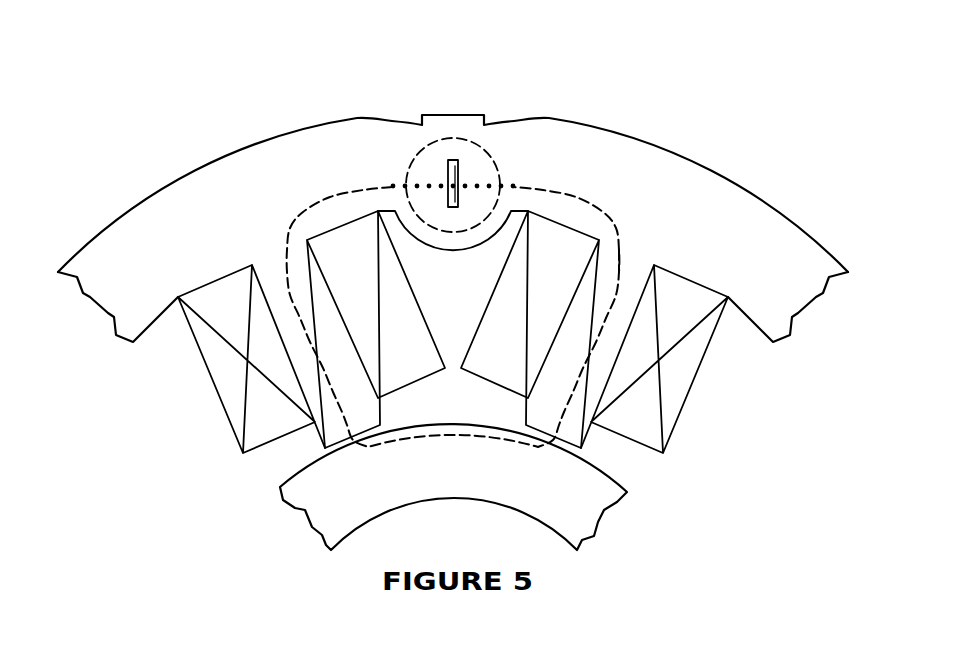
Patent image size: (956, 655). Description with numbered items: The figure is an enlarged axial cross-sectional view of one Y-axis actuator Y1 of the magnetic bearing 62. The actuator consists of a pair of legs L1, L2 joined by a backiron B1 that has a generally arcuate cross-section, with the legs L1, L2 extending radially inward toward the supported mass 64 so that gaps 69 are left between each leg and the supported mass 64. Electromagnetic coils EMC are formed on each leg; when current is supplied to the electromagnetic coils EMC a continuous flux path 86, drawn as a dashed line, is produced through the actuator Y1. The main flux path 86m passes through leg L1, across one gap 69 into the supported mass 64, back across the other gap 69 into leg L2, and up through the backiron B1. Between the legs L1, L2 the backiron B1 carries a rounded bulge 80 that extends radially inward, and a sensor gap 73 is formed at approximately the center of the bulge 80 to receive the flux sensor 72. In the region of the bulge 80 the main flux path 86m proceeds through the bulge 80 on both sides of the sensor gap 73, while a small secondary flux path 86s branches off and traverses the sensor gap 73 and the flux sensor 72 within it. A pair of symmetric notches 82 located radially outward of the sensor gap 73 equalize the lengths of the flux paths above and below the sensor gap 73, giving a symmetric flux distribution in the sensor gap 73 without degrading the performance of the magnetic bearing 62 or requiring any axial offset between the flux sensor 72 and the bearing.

The magnetic bearing 62 is at (183, 165).
The supported mass 64 is at (522, 510).
The gaps 69 is at (325, 452).
The flux sensor 72 is at (458, 165).
The sensor gap 73 is at (447, 176).
The bulge 80 is at (440, 249).
The notches 82 is at (393, 120).
The flux path 86 is at (623, 215).
The secondary flux path 86s is at (413, 184).
The main flux path 86m is at (622, 257).
The electromagnetic coils EMC is at (215, 347).
The leg L1 is at (567, 430).
The leg L2 is at (315, 425).
The backiron B1 is at (578, 140).
The Y-axis actuator Y1 is at (355, 77).